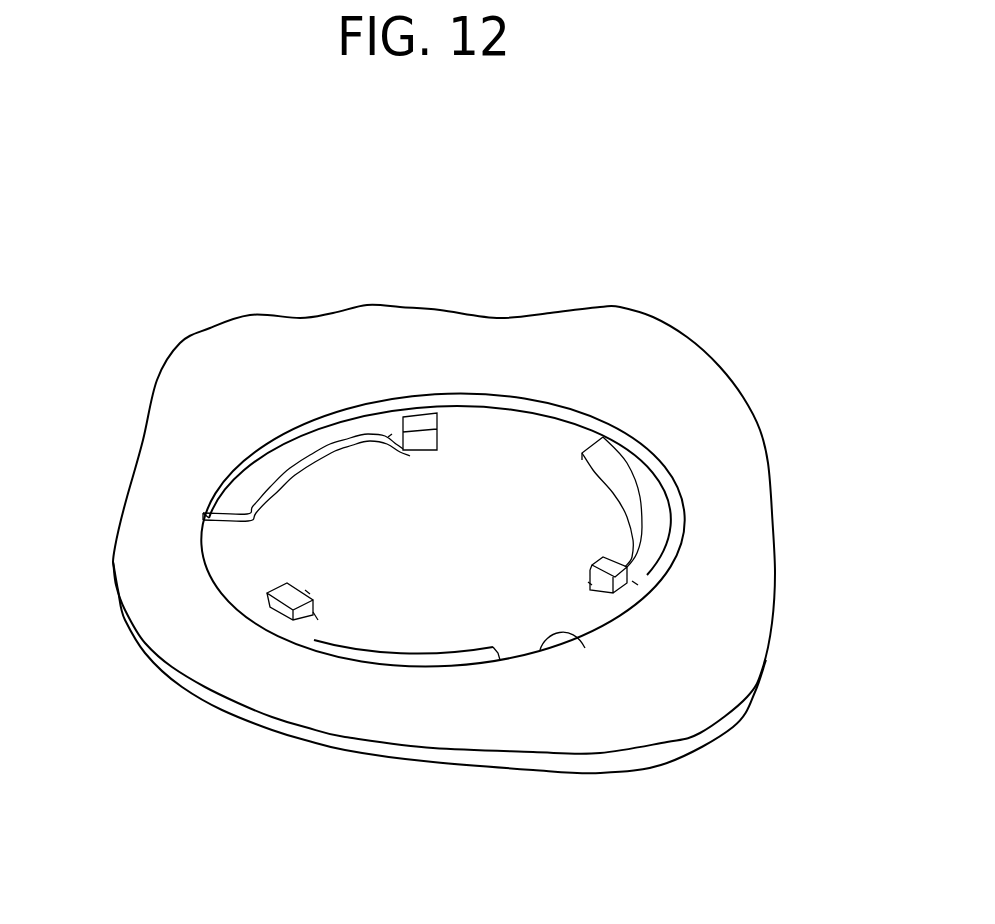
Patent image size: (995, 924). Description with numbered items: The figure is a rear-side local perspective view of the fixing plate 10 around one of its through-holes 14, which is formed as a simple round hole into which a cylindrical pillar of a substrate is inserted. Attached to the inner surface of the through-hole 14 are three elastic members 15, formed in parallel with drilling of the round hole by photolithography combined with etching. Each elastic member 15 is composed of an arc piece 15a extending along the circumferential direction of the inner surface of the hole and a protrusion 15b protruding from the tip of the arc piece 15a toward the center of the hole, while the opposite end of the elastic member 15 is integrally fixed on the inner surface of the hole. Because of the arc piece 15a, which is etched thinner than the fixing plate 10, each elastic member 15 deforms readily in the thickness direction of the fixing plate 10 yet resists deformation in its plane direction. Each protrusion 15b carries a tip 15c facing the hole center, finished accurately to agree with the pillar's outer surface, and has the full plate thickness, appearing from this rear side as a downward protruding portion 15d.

The fixing plate 10 is at (562, 325).
The through-hole 14 is at (583, 648).
The elastic member 15 is at (260, 473).
The arc piece 15a is at (307, 452).
The protrusion 15b is at (390, 432).
The tip 15c is at (590, 583).
The downward protruding portion 15d is at (420, 424).